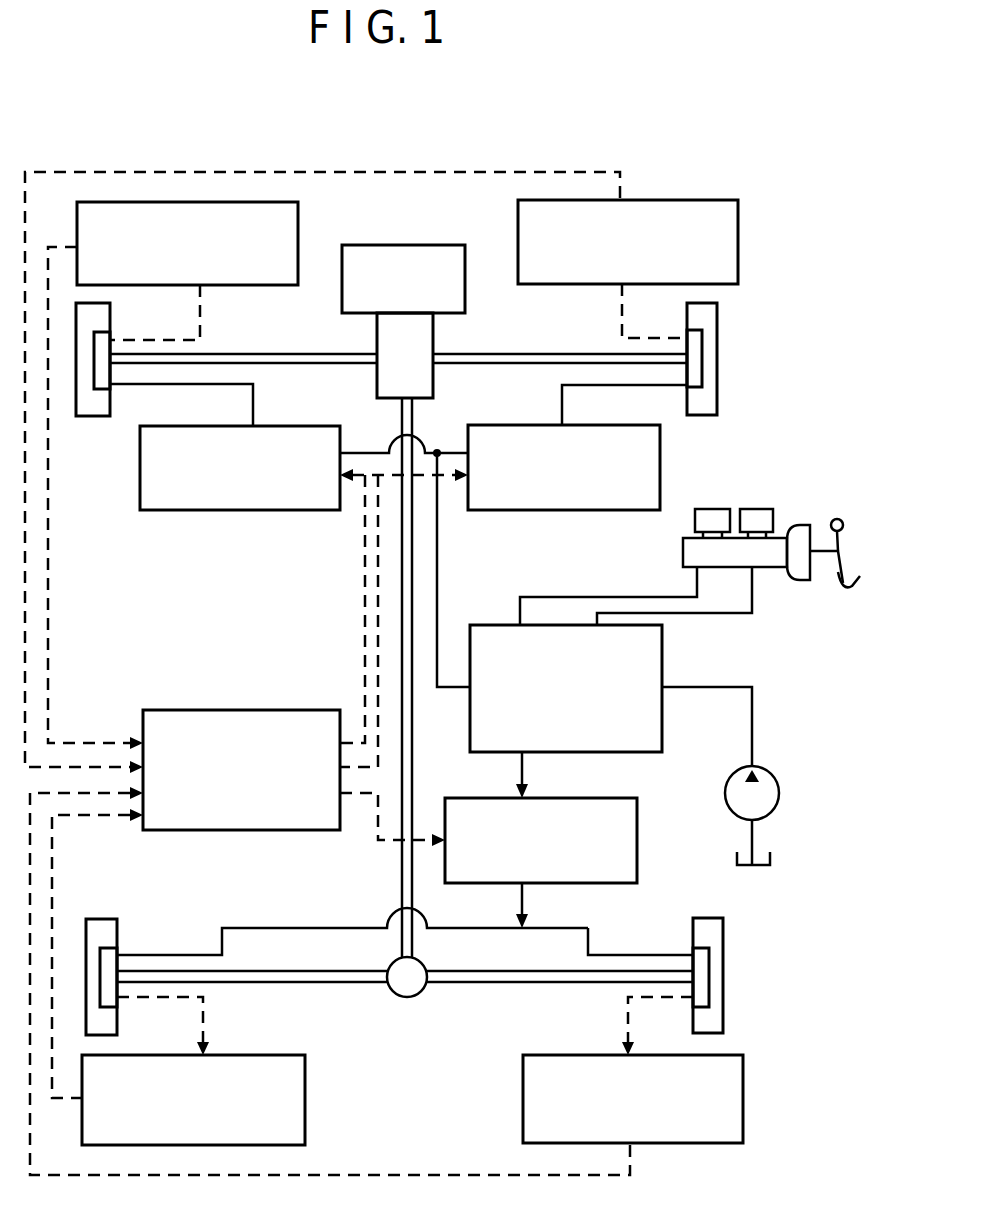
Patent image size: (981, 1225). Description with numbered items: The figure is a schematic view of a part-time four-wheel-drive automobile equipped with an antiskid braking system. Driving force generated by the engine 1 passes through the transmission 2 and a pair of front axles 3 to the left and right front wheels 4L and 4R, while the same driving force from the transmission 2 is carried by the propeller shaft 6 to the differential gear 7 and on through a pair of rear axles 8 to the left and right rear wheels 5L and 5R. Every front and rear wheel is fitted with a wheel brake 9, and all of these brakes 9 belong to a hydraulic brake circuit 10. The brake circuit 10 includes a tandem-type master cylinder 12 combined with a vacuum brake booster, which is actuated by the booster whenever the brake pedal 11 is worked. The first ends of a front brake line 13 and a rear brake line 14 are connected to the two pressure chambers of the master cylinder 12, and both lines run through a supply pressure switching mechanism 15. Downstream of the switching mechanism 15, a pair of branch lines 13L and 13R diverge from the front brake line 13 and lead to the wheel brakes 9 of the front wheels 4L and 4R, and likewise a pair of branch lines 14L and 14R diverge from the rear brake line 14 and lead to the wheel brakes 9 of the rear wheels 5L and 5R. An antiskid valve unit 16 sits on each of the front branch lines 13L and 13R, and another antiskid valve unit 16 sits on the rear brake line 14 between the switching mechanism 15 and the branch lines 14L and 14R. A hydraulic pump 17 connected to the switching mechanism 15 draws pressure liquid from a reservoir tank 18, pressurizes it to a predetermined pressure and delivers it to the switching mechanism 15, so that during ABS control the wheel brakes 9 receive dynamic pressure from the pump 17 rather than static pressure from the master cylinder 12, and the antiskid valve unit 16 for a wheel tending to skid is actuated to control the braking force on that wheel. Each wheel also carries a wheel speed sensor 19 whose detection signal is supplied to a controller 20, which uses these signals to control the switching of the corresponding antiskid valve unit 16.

The engine 1 is at (465, 262).
The transmission 2 is at (433, 388).
The front axles 3 is at (257, 352).
The left front wheel 4L is at (85, 416).
The right front wheel 4R is at (705, 415).
The left rear wheel 5L is at (85, 919).
The right rear wheel 5R is at (700, 918).
The propeller shaft 6 is at (412, 752).
The differential gear 7 is at (420, 993).
The rear axles 8 is at (287, 985).
The wheel brake 9 is at (105, 373).
The hydraulic brake circuit 10 is at (778, 380).
The brake pedal 11 is at (858, 574).
The master cylinder 12 is at (765, 567).
The front brake line 13 is at (437, 555).
The left front branch line 13L is at (253, 404).
The right front branch line 13R is at (562, 408).
The rear brake line 14 is at (710, 613).
The left rear branch line 14L is at (290, 926).
The right rear branch line 14R is at (588, 935).
The supply pressure switching mechanism 15 is at (662, 712).
The antiskid valve unit 16 is at (148, 512).
The hydraulic pump 17 is at (778, 790).
The reservoir tank 18 is at (770, 858).
The wheel speed sensor 19 is at (298, 212).
The controller 20 is at (275, 832).